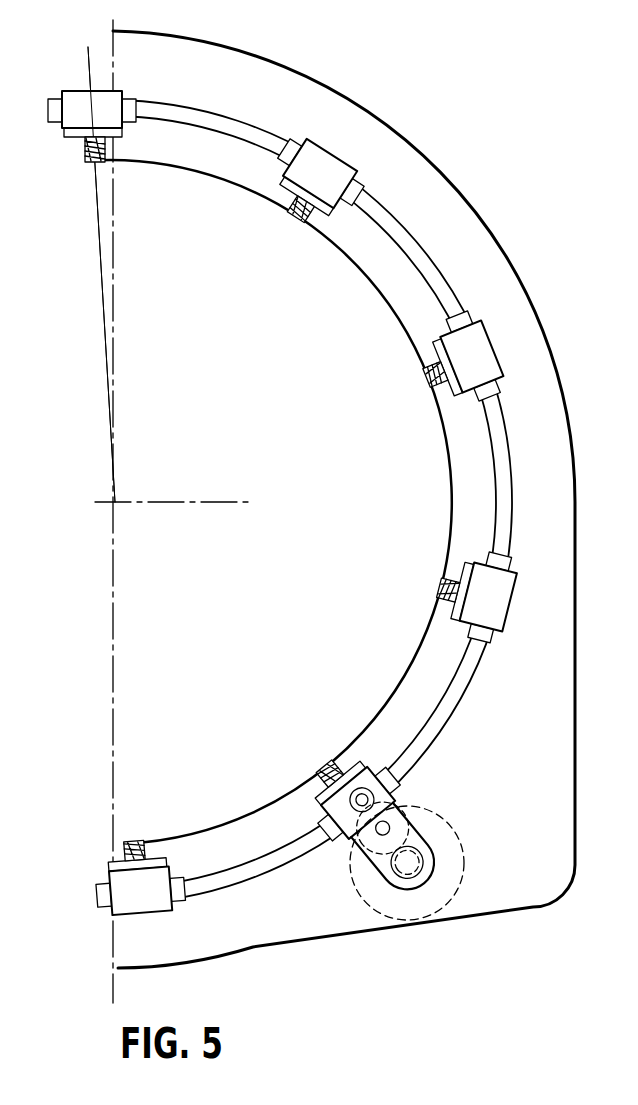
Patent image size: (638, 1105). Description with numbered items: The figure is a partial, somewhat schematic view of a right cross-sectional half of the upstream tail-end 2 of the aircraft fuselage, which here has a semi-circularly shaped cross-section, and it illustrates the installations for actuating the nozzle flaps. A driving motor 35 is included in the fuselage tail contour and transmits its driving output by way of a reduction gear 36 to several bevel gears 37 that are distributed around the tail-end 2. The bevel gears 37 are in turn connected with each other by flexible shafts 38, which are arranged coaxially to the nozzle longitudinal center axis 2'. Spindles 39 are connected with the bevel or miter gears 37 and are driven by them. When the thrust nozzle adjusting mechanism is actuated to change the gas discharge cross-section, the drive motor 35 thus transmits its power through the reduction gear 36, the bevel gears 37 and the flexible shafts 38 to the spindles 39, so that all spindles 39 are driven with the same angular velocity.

The tail-end of the aircraft fuselage 2 is at (344, 499).
The nozzle longitudinal axis 2' is at (169, 511).
The driving motor 35 is at (378, 896).
The reduction gear 36 is at (405, 848).
The bevel gears 37 is at (80, 95).
The flexible shafts 38 is at (237, 95).
The spindles 39 is at (85, 155).